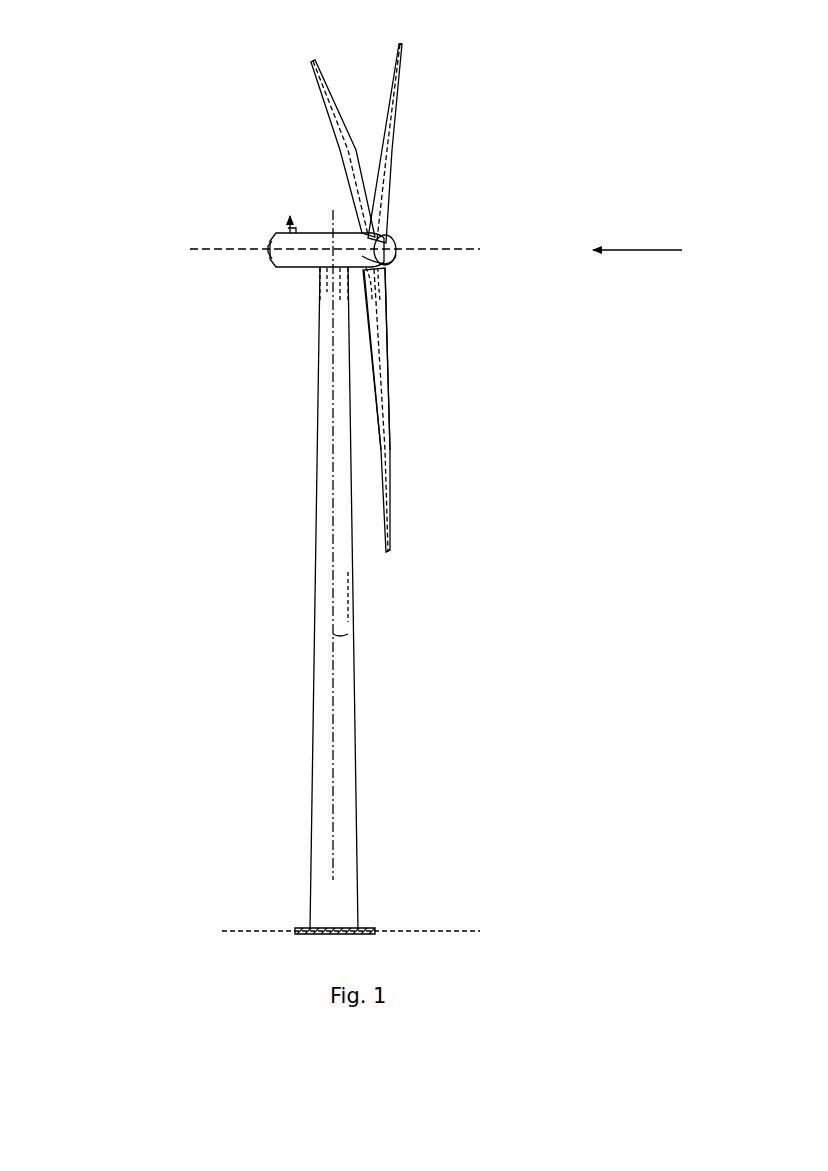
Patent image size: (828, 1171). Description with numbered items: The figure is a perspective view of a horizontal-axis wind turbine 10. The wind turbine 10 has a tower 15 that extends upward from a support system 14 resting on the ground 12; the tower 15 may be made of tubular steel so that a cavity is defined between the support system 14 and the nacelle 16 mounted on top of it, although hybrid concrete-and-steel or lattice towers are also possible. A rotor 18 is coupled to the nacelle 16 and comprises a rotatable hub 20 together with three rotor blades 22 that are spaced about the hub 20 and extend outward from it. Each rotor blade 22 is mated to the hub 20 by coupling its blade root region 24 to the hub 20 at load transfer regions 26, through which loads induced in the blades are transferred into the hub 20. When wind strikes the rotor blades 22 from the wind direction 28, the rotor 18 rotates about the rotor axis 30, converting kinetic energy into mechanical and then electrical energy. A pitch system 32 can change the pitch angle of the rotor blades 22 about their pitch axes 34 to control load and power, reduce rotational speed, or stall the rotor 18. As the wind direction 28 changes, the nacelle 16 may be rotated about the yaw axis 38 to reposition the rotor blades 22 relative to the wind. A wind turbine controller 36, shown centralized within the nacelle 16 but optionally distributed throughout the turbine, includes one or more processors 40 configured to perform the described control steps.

The wind turbine 10 is at (125, 66).
The ground 12 is at (240, 930).
The support system 14 is at (300, 930).
The tower 15 is at (326, 578).
The nacelle 16 is at (296, 270).
The rotor 18 is at (402, 167).
The rotatable hub 20 is at (396, 245).
The rotor blade 22 is at (330, 118).
The blade root region 24 is at (384, 343).
The load transfer regions 26 is at (378, 270).
The wind direction 28 is at (656, 250).
The rotor axis 30 is at (450, 251).
The pitch system 32 is at (383, 290).
The pitch axes 34 is at (310, 63).
The wind turbine controller 36 is at (330, 292).
The yaw axis 38 is at (350, 634).
The processors 40 is at (338, 208).